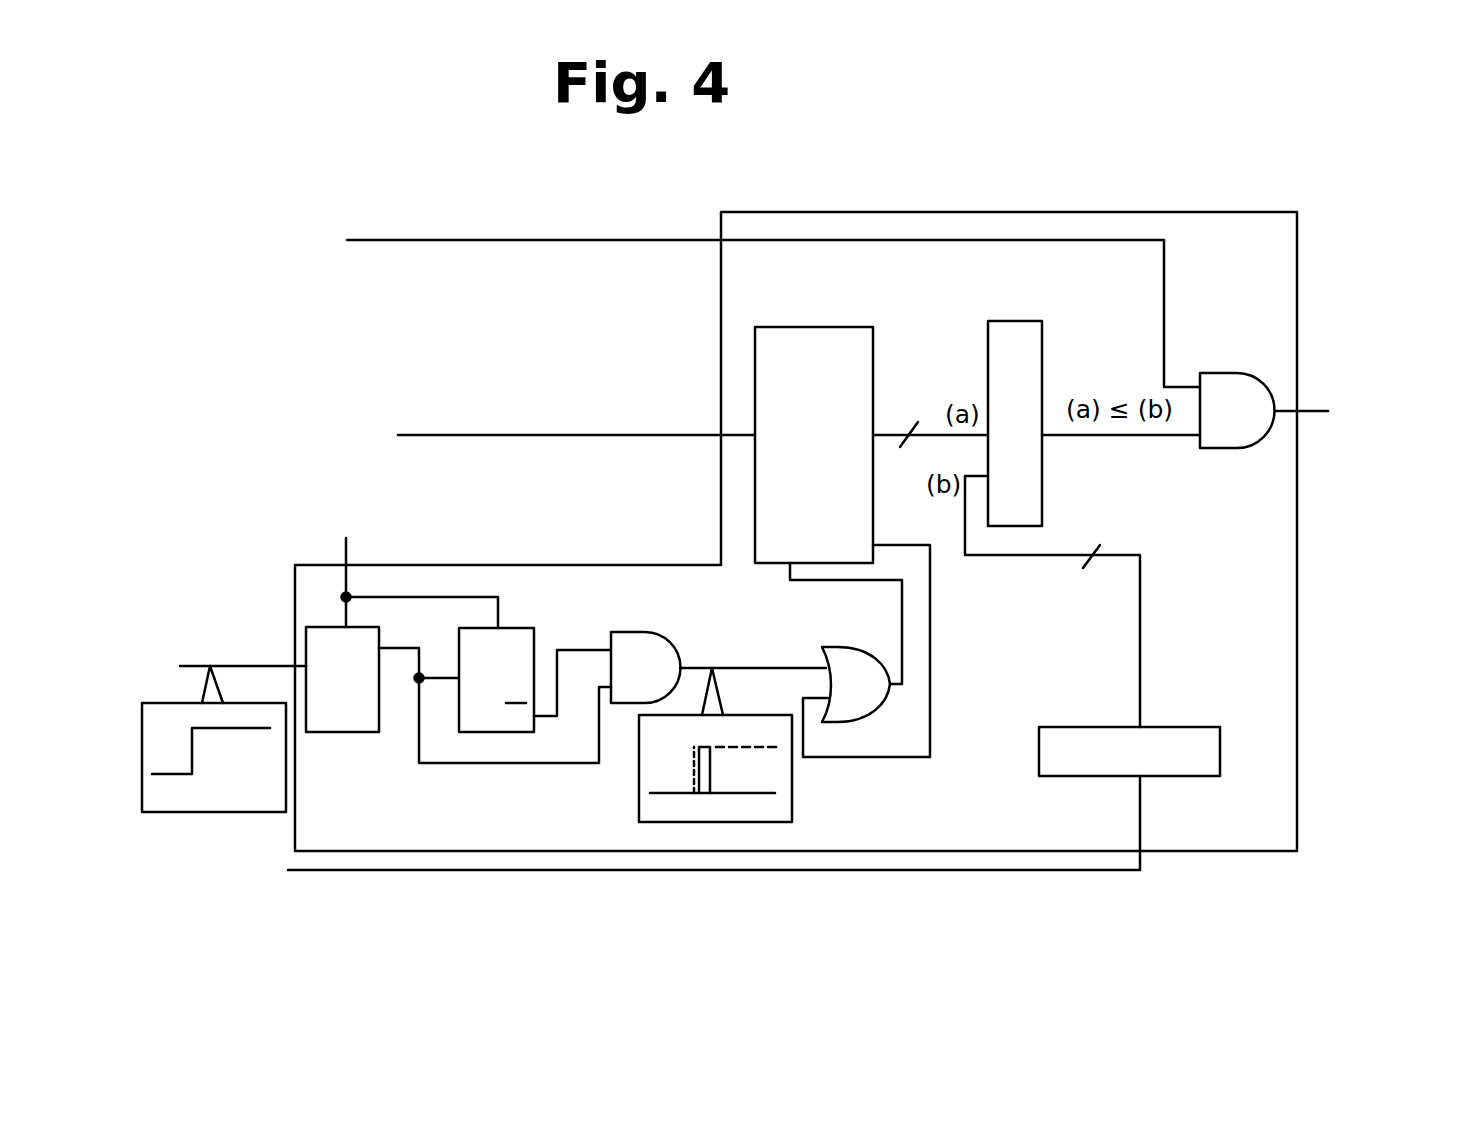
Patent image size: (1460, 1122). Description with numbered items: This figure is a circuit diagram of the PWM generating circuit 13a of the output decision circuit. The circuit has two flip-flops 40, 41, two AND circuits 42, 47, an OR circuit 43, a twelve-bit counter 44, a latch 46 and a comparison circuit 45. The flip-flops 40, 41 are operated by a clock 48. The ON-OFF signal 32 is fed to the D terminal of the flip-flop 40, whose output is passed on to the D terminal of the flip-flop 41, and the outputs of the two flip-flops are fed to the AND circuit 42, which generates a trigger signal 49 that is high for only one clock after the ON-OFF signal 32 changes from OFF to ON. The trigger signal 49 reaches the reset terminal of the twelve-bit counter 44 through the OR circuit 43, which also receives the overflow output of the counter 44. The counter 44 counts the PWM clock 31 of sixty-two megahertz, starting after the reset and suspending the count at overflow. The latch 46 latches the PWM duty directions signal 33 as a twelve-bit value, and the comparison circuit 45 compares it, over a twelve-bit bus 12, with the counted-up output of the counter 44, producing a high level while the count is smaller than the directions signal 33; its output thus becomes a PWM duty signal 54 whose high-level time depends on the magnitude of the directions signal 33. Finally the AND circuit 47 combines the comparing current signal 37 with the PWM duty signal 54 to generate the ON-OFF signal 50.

The PWM generating circuit 13a is at (782, 212).
The comparing current signal 37 is at (580, 240).
The PWM clock line 31 is at (570, 435).
The 12 bit counter 44 is at (810, 327).
The 12-bit bus 12 is at (988, 477).
The comparison circuit 45 is at (1017, 321).
The PWM duty signal 54 is at (1133, 437).
The AND circuit 47 is at (1228, 373).
The ON-OFF signal 50 is at (1318, 410).
The clock 48 is at (346, 548).
The ON-OFF signal 32 is at (262, 666).
The flip-flop 40 is at (352, 733).
The flip-flop 41 is at (483, 733).
The AND circuit 42 is at (637, 632).
The trigger signal 49 is at (758, 668).
The OR circuit 43 is at (850, 647).
The latch 46 is at (1163, 727).
The PWM duty directions signal 33 is at (1140, 817).